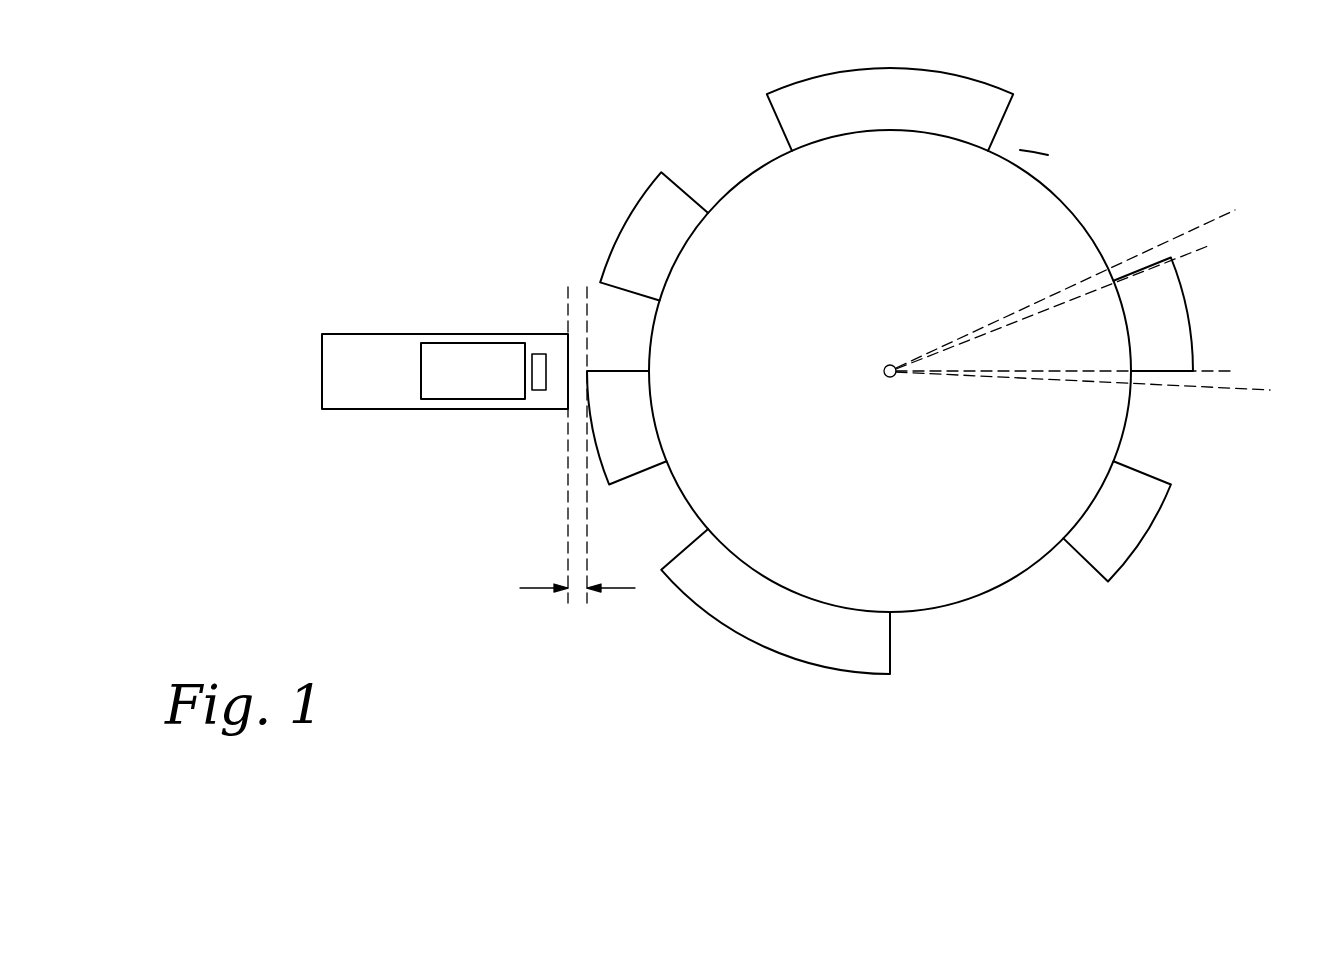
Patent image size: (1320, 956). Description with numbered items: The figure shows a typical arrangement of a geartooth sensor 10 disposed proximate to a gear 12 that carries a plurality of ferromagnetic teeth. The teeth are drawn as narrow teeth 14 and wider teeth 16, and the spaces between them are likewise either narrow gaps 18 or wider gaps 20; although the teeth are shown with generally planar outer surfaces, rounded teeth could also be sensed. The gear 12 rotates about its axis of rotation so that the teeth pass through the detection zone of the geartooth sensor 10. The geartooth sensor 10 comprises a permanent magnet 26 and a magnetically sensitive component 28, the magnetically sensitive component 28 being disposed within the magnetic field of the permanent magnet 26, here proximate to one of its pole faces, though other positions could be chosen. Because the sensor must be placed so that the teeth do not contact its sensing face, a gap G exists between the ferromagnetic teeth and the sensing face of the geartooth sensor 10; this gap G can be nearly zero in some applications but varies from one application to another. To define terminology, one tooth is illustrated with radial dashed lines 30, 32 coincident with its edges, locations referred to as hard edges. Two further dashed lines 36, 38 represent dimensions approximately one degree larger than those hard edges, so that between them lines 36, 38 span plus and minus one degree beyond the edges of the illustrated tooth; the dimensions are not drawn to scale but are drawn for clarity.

The geartooth sensor 10 is at (352, 343).
The gear 12 is at (945, 586).
The narrow teeth 14 is at (655, 217).
The wider teeth 16 is at (987, 102).
The narrow gaps 18 is at (697, 135).
The wider gaps 20 is at (1048, 155).
The permanent magnet 26 is at (462, 390).
The magnetically sensitive component 28 is at (540, 353).
The radial dashed line 30 is at (1194, 253).
The radial dashed line 32 is at (1218, 370).
The dashed line 36 is at (1207, 222).
The dashed line 38 is at (1258, 390).
The gap G is at (578, 596).